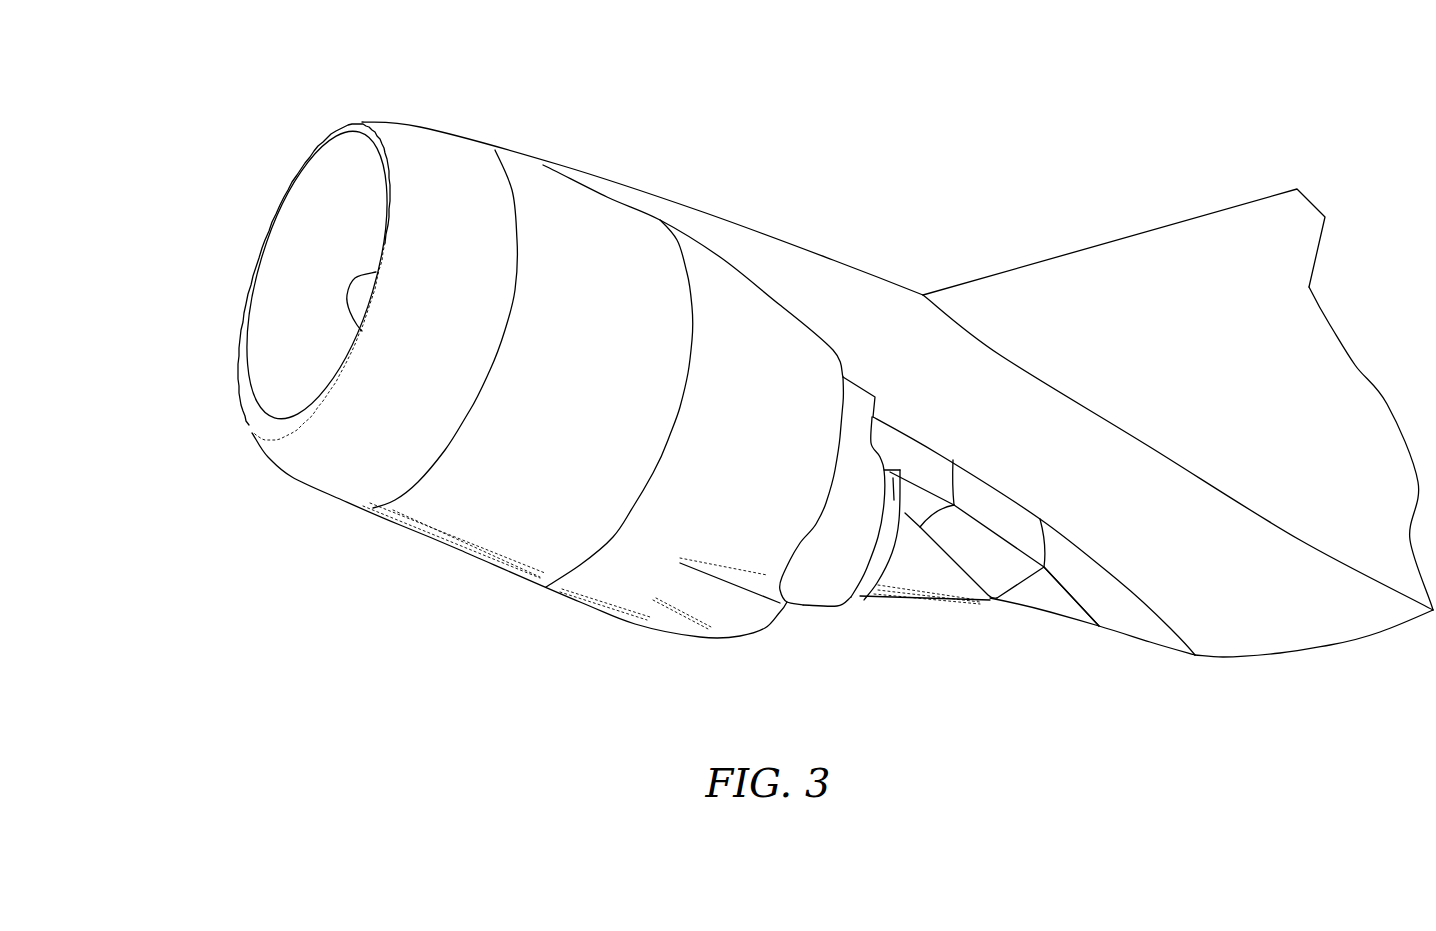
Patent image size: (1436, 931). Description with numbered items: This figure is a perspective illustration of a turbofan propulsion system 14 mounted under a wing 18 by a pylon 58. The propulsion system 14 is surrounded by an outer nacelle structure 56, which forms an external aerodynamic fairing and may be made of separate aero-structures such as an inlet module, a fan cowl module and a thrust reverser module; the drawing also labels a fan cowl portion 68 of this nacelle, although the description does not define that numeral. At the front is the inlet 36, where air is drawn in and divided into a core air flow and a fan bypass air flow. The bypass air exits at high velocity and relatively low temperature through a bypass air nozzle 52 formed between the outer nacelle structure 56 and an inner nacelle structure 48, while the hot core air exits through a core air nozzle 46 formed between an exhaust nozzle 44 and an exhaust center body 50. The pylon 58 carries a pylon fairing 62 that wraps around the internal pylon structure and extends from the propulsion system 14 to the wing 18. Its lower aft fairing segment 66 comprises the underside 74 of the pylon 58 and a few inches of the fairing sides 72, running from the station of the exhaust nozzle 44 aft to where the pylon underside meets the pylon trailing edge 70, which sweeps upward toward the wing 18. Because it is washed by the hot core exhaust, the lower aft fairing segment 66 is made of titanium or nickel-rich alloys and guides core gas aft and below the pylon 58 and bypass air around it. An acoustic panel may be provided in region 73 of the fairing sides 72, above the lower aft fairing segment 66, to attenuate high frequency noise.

The propulsion system 14 is at (483, 128).
The wing 18 is at (1120, 240).
The inlet 36 is at (274, 289).
The exhaust nozzle 44 is at (903, 470).
The core air nozzle 46 is at (862, 610).
The inner nacelle structure 48 is at (798, 592).
The exhaust center body 50 is at (931, 606).
The bypass air nozzle 52 is at (822, 587).
The outer nacelle structure 56 is at (453, 563).
The pylon 58 is at (833, 255).
The pylon fairing 62 is at (823, 297).
The lower aft fairing segment 66 is at (1126, 655).
The fan cowl 68 is at (610, 173).
The pylon trailing edge 70 is at (1350, 642).
The fairing sides 72 is at (1190, 583).
The region 73 is at (1046, 494).
The underside 74 is at (1044, 598).